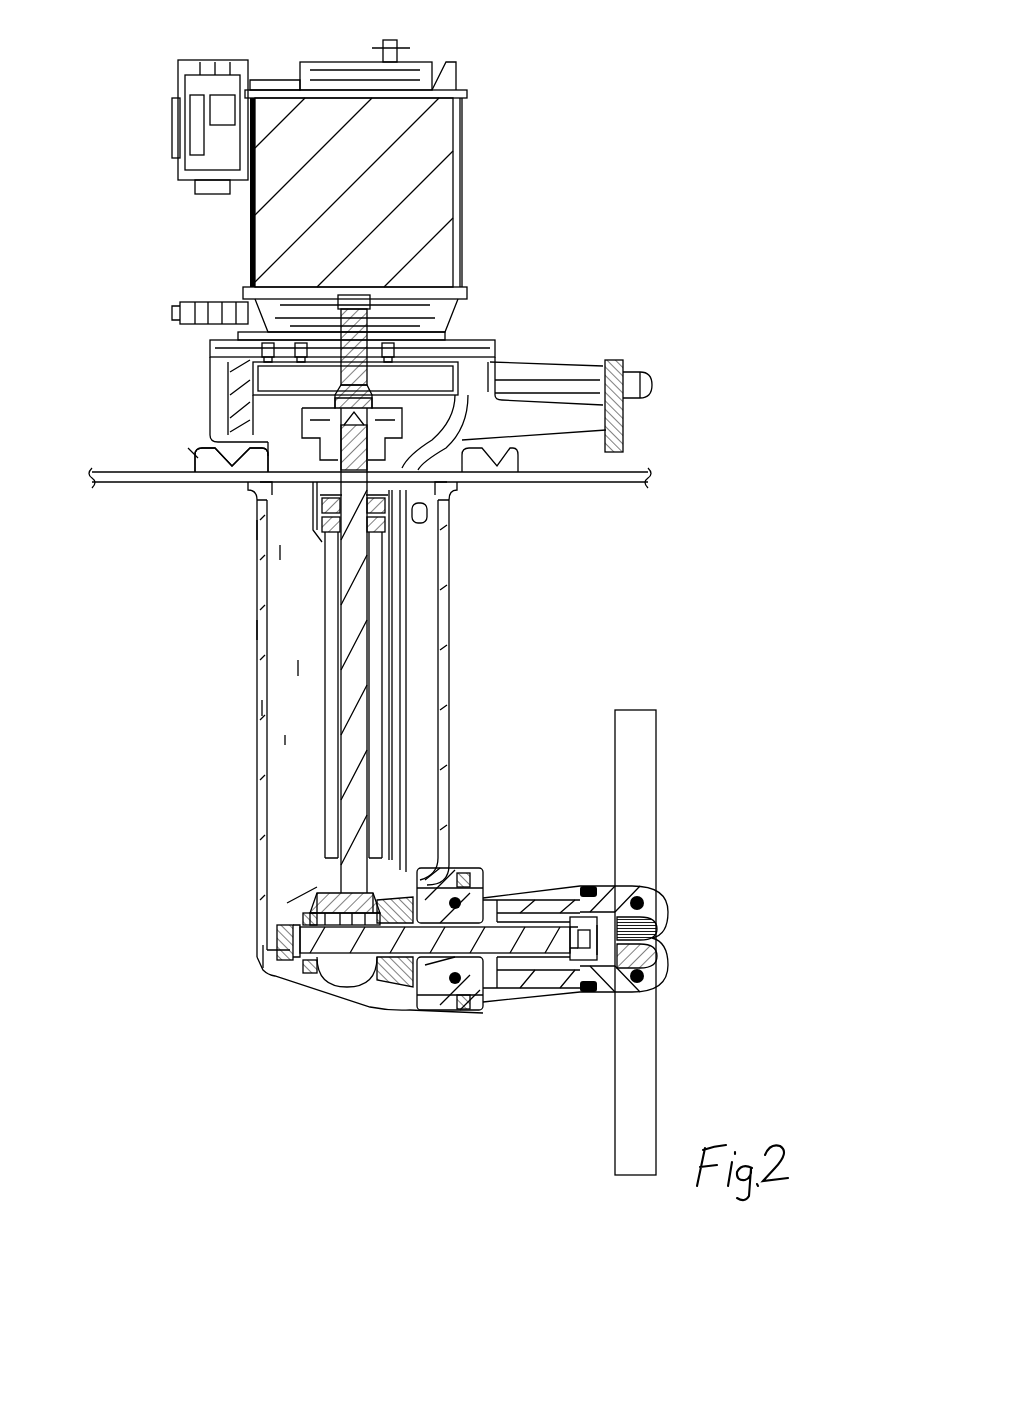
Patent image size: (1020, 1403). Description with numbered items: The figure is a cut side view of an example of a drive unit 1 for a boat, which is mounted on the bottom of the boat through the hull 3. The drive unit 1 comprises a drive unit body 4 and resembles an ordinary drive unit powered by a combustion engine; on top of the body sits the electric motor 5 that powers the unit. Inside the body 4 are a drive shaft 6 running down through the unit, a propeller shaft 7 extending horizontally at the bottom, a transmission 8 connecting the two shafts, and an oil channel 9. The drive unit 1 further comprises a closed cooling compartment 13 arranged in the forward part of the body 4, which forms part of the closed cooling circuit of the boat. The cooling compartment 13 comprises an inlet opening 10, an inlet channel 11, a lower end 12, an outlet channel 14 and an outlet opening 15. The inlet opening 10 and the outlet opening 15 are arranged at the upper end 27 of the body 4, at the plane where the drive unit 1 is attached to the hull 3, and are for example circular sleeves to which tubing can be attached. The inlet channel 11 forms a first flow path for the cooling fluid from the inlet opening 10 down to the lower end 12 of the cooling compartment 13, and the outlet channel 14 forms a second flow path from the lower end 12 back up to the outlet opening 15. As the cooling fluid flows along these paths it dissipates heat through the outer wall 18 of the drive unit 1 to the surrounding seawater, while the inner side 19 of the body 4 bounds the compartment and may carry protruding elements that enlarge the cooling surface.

The drive unit 1 is at (428, 425).
The hull 3 is at (370, 512).
The drive unit body 4 is at (379, 719).
The electric motor 5 is at (352, 186).
The drive shaft 6 is at (420, 594).
The propeller shaft 7 is at (448, 1019).
The transmission 8 is at (466, 911).
The oil channel 9 is at (418, 676).
The inlet opening 10 is at (221, 429).
The inlet channel 11 is at (233, 569).
The lower end 12 is at (407, 946).
The closed cooling compartment 13 is at (243, 676).
The outlet channel 14 is at (213, 630).
The outlet opening 15 is at (141, 435).
The outer wall 18 is at (222, 718).
The inner side 19 is at (234, 776).
The upper end 27 is at (205, 530).